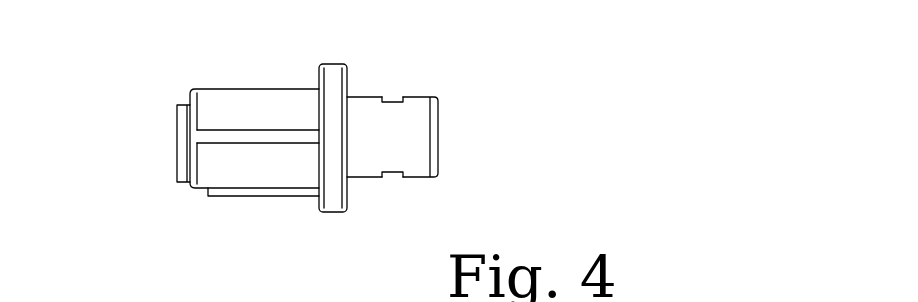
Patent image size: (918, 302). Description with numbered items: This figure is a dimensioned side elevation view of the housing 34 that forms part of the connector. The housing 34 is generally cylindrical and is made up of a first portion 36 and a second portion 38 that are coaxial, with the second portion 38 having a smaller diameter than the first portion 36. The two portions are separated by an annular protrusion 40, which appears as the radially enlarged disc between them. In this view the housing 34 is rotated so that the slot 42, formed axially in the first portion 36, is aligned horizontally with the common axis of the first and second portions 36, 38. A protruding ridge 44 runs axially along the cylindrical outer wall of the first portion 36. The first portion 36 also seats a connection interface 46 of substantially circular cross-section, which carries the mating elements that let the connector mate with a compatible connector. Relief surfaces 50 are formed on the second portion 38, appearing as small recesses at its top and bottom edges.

The housing 34 is at (117, 68).
The first portion 36 is at (262, 163).
The second portion 38 is at (413, 151).
The annular protrusion 40 is at (333, 180).
The slot 42 is at (283, 127).
The protruding ridge 44 is at (223, 200).
The connection interface 46 is at (177, 130).
The relief surfaces 50 is at (393, 99).